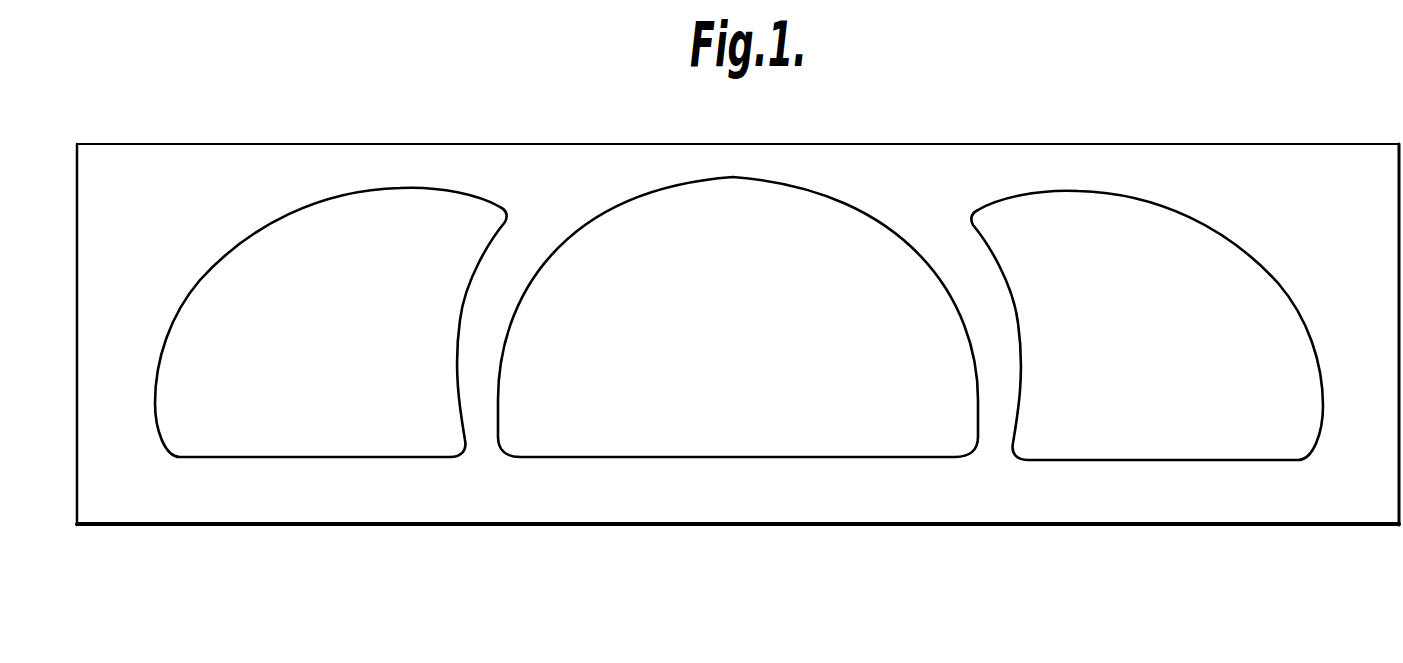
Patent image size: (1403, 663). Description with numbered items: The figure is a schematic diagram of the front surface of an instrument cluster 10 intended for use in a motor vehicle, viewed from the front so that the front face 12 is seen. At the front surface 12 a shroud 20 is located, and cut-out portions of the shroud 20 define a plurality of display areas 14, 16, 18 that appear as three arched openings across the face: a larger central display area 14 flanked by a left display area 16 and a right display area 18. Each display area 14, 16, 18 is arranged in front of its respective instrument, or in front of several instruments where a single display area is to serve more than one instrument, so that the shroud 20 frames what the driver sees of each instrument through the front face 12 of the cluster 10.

The instrument cluster 10 is at (597, 110).
The front face 12 is at (938, 138).
The display area 14 is at (707, 437).
The display area 16 is at (312, 438).
The display area 18 is at (1143, 442).
The shroud 20 is at (147, 163).